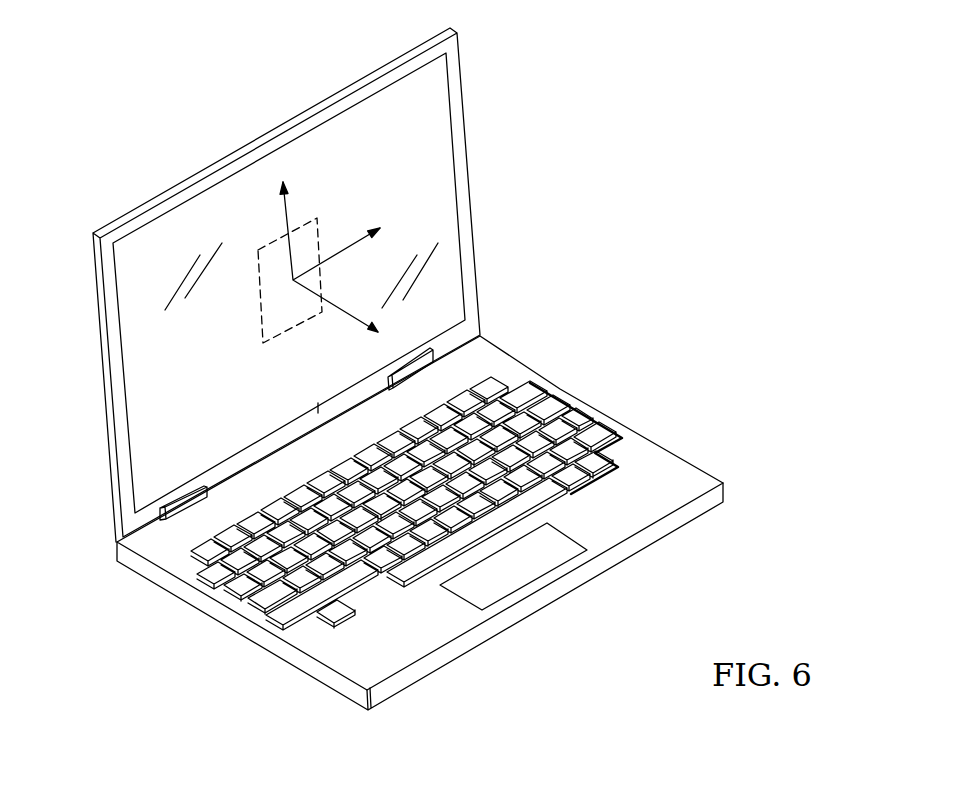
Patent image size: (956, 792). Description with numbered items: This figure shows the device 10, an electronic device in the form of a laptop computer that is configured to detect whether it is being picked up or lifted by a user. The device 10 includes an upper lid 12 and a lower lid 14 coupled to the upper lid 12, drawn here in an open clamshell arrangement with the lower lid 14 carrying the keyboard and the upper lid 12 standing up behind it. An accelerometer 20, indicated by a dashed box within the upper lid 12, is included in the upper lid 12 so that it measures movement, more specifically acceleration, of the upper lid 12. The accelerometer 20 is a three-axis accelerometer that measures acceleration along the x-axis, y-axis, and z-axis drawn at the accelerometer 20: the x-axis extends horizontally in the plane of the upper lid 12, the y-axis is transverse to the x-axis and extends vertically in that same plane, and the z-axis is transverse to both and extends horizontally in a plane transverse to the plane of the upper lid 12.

The device 10 is at (115, 100).
The upper lid 12 is at (463, 170).
The lower lid 14 is at (663, 460).
The accelerometer 20 is at (280, 235).